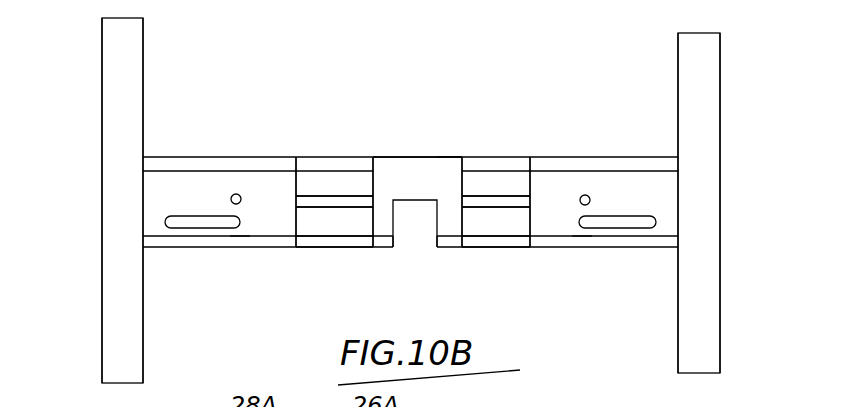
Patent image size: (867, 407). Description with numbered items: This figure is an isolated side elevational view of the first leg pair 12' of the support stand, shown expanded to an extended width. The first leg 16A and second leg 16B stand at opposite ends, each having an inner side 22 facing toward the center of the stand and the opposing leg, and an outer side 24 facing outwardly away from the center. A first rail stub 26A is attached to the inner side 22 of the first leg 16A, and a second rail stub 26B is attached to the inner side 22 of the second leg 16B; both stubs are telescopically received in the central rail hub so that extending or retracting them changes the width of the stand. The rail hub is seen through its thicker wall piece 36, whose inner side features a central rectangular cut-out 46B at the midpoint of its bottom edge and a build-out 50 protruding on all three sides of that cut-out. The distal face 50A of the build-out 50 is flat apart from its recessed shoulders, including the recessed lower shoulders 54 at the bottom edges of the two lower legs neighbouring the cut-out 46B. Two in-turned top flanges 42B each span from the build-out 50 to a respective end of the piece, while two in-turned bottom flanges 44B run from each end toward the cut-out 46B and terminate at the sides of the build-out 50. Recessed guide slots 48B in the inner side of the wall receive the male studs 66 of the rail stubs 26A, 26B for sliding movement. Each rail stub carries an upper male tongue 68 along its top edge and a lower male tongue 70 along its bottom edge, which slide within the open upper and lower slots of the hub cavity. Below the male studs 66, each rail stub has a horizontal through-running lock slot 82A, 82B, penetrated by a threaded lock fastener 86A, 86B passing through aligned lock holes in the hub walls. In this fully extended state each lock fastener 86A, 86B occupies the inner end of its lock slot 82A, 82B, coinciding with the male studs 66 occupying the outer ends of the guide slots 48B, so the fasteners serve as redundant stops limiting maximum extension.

The first leg pair 12' is at (408, 210).
The first leg 16A is at (125, 78).
The second leg 16B is at (705, 214).
The inner side 22 is at (143, 372).
The outer side 24 is at (102, 318).
The first rail stub 26A is at (259, 173).
The second rail stub 26B is at (569, 166).
The thicker wall piece 36 is at (448, 159).
The in-turned top flanges 42B is at (333, 163).
The in-turned bottom flanges 44B is at (310, 235).
The central rectangular cut-out 46B is at (415, 238).
The guide slots 48B is at (348, 200).
The build-out 50 is at (387, 157).
The distal face of the build-out 50A is at (433, 190).
The recessed lower shoulders 54 is at (388, 242).
The male studs 66 is at (231, 197).
The upper male tongue 68 is at (173, 163).
The lower male tongue 70 is at (163, 248).
The first lock slot 82A is at (183, 240).
The second lock slot 82B is at (632, 240).
The first lock fastener 86A is at (240, 248).
The second lock fastener 86B is at (582, 233).